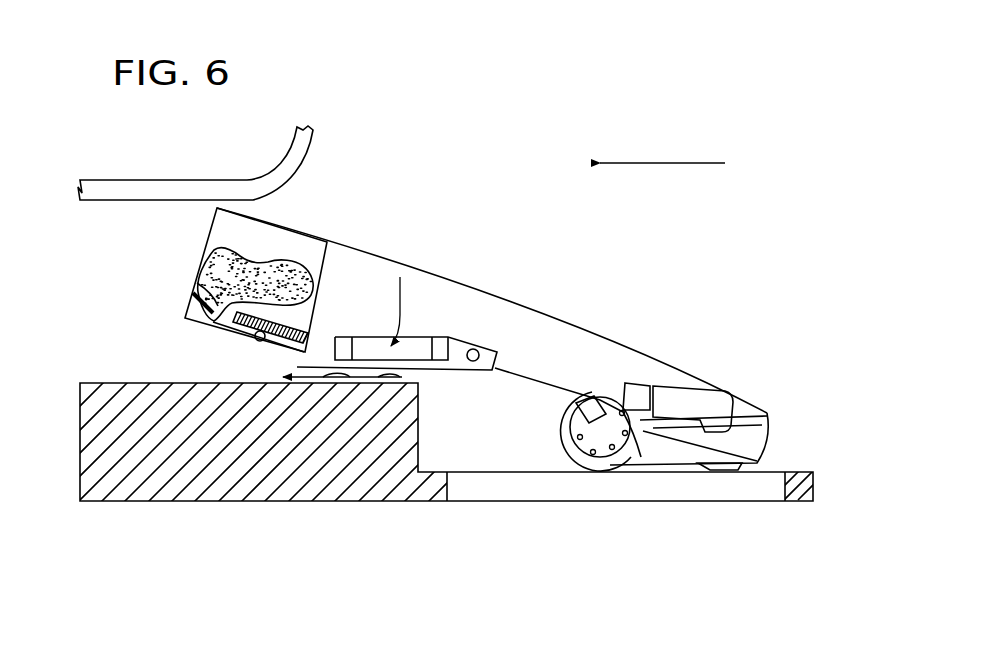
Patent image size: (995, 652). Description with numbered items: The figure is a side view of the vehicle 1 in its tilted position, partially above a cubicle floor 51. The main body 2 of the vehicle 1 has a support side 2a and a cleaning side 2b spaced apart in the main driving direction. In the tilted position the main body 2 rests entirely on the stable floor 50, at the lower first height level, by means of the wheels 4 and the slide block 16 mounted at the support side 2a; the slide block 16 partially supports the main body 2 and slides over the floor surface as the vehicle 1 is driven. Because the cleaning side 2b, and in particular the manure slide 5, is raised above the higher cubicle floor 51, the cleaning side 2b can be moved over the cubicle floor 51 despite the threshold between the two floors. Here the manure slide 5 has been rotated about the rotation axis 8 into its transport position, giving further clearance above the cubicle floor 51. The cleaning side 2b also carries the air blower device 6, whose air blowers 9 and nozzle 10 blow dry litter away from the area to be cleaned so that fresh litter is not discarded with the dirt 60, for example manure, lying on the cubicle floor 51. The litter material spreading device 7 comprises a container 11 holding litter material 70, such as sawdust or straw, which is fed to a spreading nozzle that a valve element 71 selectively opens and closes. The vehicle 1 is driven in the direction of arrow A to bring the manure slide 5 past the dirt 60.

The vehicle 1 is at (443, 255).
The main body 2 is at (515, 328).
The support side 2a is at (707, 380).
The cleaning side 2b is at (345, 245).
The wheels 4 is at (610, 463).
The manure slide 5 is at (281, 324).
The air blower device 6 is at (440, 352).
The litter material spreading device 7 is at (178, 310).
The rotation axis 8 is at (259, 336).
The air blowers 9 is at (422, 346).
The nozzle 10 is at (335, 337).
The container 11 is at (257, 258).
The slide block 16 is at (736, 465).
The stable floor 50 is at (777, 465).
The cubicle floor 51 is at (104, 380).
The dirt 60 is at (400, 378).
The litter material 70 is at (220, 268).
The valve element 71 is at (197, 283).